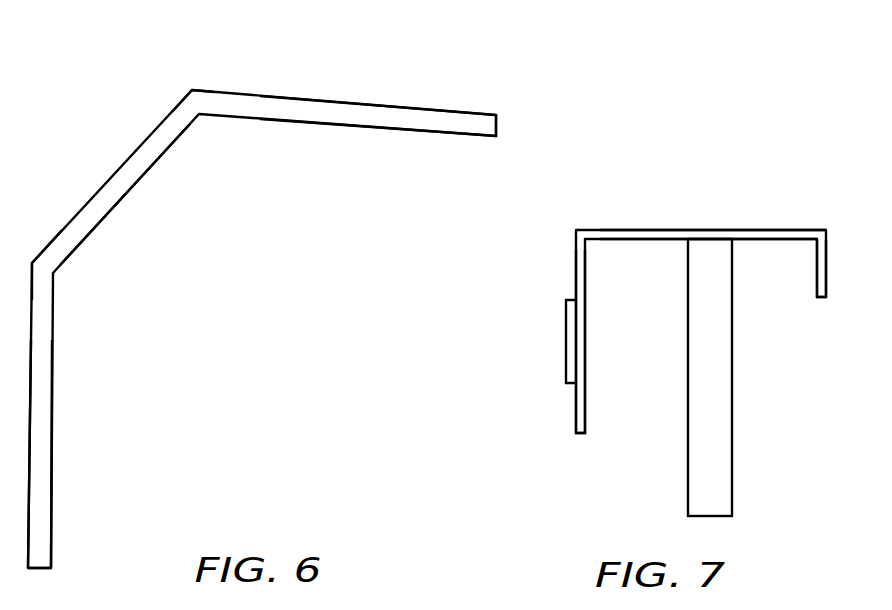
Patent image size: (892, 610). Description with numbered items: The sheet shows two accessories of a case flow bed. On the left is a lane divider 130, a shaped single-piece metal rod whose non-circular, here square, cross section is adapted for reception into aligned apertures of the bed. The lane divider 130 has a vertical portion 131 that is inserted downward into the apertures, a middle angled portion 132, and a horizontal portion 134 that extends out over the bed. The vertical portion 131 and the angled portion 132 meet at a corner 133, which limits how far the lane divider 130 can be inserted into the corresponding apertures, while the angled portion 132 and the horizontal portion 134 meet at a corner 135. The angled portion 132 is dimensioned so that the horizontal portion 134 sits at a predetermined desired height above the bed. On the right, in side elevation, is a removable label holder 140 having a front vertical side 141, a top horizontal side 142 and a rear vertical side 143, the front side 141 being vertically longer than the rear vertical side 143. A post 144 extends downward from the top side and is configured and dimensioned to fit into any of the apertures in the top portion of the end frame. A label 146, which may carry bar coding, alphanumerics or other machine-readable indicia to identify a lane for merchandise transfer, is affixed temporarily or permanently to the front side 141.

In FIG. 6, the lane divider 130 is at (131, 108).
In FIG. 6, the vertical portion 131 is at (51, 495).
In FIG. 6, the middle angled portion 132 is at (127, 193).
In FIG. 6, the corner 133 is at (32, 262).
In FIG. 6, the horizontal portion 134 is at (378, 105).
In FIG. 6, the corner 135 is at (192, 89).
In FIG. 7, the label holder 140 is at (678, 180).
In FIG. 7, the front vertical side 141 is at (576, 273).
In FIG. 7, the top horizontal side 142 is at (790, 229).
In FIG. 7, the rear vertical side 143 is at (826, 260).
In FIG. 7, the post 144 is at (732, 432).
In FIG. 7, the label 146 is at (565, 357).